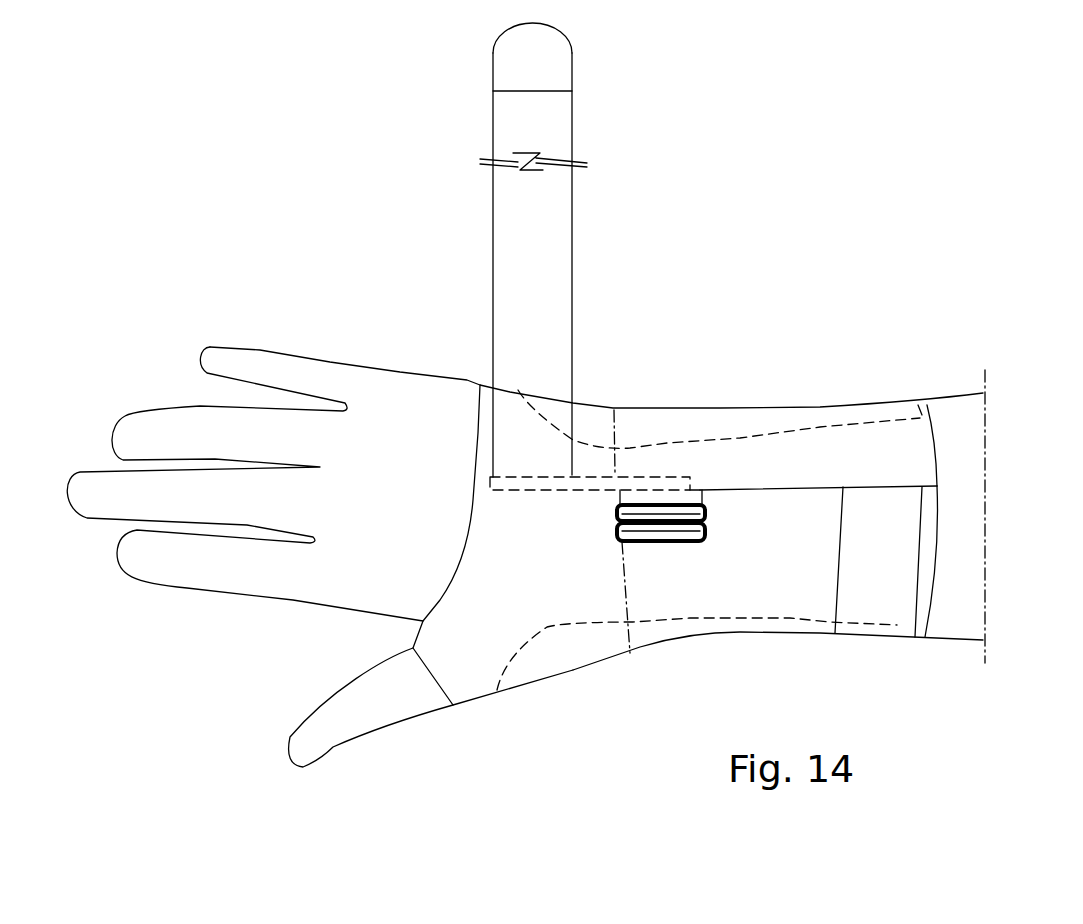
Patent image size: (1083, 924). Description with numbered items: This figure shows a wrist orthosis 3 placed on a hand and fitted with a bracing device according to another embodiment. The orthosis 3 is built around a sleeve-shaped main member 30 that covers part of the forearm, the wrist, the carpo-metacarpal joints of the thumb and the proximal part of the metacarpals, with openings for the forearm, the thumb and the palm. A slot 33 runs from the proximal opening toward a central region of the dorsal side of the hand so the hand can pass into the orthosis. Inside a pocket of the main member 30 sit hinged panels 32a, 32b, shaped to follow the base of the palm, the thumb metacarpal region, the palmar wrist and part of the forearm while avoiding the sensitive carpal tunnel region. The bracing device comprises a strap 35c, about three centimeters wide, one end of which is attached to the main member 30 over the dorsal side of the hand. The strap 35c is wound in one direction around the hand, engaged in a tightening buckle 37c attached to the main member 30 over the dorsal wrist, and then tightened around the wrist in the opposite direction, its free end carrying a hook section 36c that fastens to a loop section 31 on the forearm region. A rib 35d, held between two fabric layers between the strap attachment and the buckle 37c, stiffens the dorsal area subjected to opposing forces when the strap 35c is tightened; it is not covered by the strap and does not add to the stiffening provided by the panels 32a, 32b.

The wrist orthosis 3 is at (760, 380).
The main member 30 is at (712, 408).
The loop section 31 is at (880, 613).
The panel 32a is at (570, 657).
The panel 32b is at (653, 427).
The slot 33 is at (805, 483).
The strap 35c is at (555, 218).
The rib 35d is at (495, 478).
The hook section 36c is at (557, 63).
The tightening buckle 37c is at (658, 542).